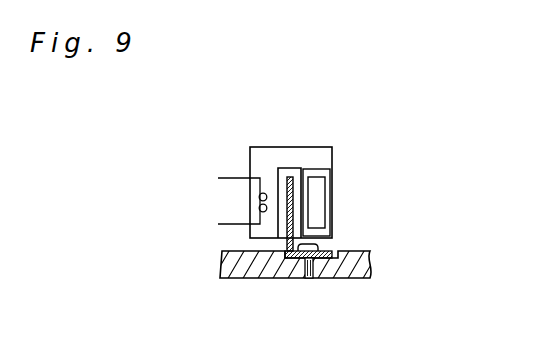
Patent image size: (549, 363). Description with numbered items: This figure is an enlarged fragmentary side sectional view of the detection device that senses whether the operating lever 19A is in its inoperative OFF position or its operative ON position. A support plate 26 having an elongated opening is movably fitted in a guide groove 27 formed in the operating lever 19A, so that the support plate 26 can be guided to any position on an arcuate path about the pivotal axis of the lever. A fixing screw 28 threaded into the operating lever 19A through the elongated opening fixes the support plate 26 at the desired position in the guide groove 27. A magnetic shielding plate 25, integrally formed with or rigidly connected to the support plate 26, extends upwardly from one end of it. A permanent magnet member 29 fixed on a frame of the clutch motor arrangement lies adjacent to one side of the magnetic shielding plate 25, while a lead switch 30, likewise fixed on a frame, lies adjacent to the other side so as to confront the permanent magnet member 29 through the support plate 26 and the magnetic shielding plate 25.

The operating lever 19A is at (370, 265).
The magnetic shielding plate 25 is at (291, 177).
The support plate 26 is at (273, 278).
The guide groove 27 is at (351, 252).
The fixing screw 28 is at (309, 278).
The permanent magnet member 29 is at (318, 200).
The lead switch 30 is at (258, 198).